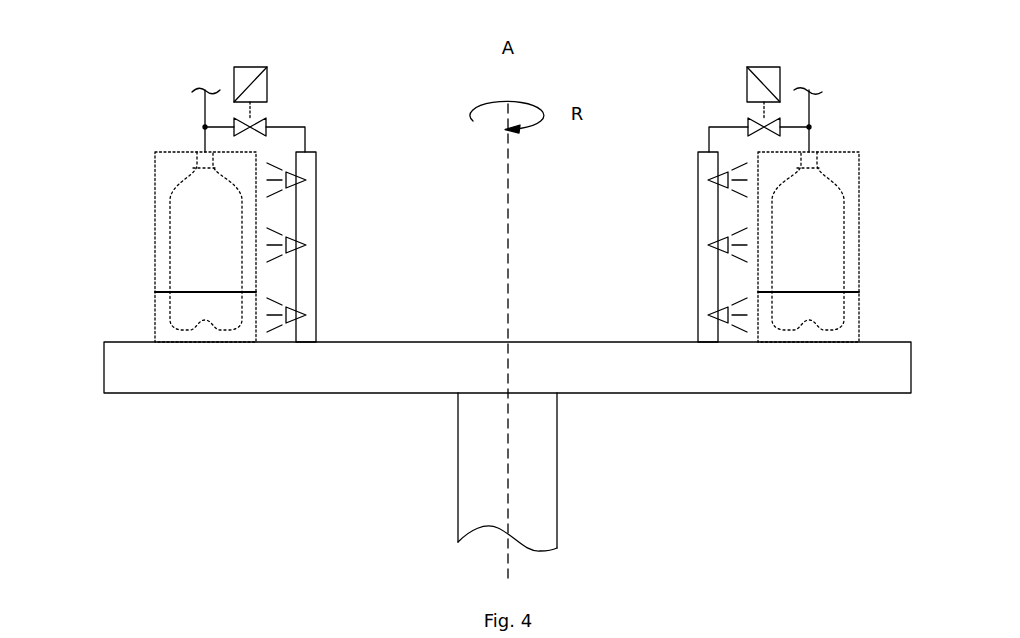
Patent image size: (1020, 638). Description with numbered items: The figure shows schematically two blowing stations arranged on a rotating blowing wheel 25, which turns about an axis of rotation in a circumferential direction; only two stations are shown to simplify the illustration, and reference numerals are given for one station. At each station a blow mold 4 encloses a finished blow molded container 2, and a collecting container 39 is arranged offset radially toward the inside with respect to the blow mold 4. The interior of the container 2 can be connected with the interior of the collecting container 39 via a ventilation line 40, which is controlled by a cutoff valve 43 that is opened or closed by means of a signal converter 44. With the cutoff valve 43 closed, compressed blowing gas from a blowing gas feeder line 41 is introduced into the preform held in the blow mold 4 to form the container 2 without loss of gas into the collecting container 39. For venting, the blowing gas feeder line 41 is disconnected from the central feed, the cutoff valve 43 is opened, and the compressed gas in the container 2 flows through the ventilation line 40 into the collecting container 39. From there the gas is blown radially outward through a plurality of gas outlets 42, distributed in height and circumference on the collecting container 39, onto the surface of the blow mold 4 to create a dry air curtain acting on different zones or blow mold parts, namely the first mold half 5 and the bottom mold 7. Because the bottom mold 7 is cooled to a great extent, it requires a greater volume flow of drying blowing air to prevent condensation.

The container 2 is at (170, 273).
The blow mold 4 is at (97, 201).
The first mold half 5 is at (155, 162).
The bottom mold 7 is at (155, 320).
The blowing wheel 25 is at (218, 378).
The collecting container 39 is at (313, 152).
The ventilation line 40 is at (286, 127).
The blowing gas feeder line 41 is at (203, 107).
The gas outlets 42 is at (308, 175).
The cutoff valve 43 is at (246, 122).
The signal converter 44 is at (248, 67).